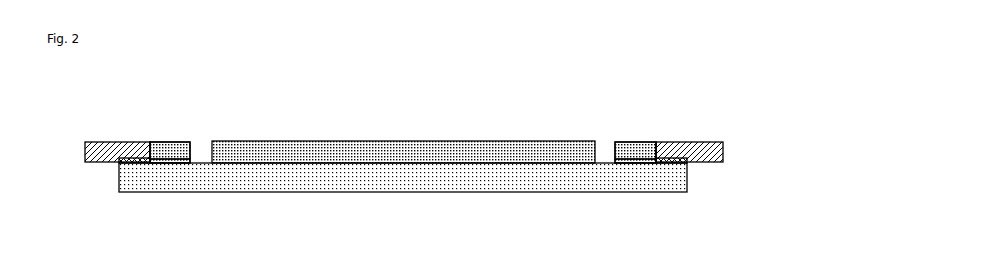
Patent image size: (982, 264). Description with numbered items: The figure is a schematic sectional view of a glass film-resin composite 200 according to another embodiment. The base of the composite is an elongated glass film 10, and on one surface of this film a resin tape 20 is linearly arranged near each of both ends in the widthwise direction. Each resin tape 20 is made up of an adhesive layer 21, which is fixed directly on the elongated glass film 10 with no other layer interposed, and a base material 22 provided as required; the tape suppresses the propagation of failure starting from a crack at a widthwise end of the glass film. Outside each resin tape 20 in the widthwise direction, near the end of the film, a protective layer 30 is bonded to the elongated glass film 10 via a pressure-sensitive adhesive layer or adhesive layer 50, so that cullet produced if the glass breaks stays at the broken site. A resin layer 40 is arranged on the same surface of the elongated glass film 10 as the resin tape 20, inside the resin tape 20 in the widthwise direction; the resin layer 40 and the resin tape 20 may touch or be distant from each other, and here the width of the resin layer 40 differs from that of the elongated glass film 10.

The glass film-resin composite 200 is at (834, 85).
The elongated glass film 10 is at (683, 191).
The resin tape 20 is at (242, 84).
The adhesive layer 21 is at (192, 142).
The base material 22 is at (167, 142).
The protective layer 30 is at (85, 147).
The resin layer 40 is at (360, 141).
The pressure-sensitive adhesive layer or adhesive layer 50 is at (118, 162).